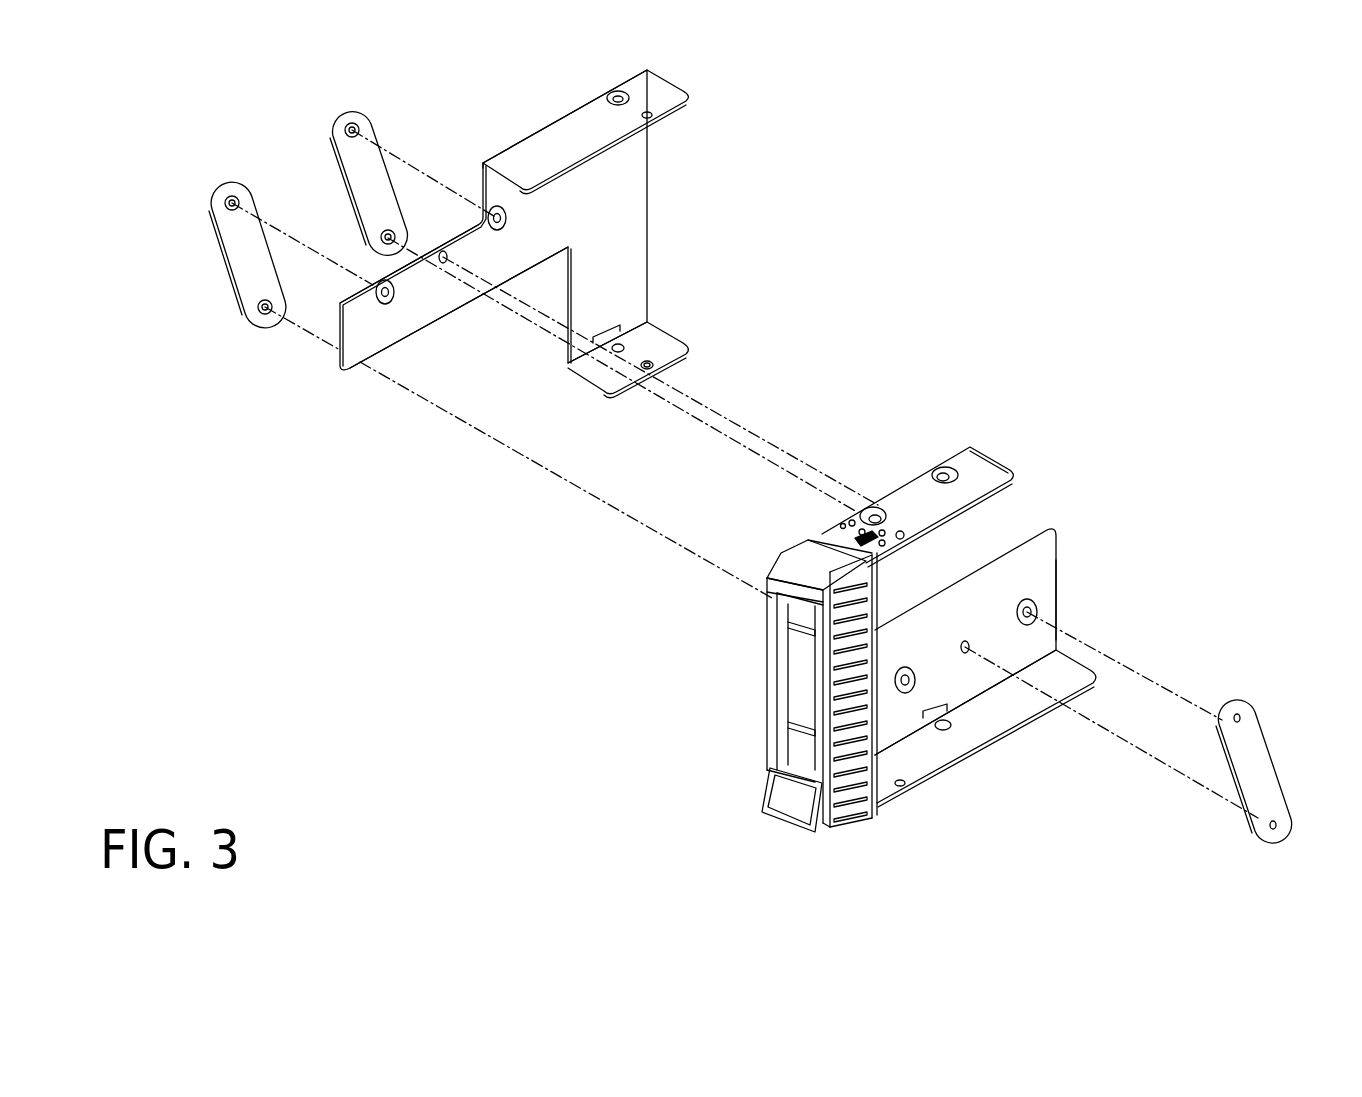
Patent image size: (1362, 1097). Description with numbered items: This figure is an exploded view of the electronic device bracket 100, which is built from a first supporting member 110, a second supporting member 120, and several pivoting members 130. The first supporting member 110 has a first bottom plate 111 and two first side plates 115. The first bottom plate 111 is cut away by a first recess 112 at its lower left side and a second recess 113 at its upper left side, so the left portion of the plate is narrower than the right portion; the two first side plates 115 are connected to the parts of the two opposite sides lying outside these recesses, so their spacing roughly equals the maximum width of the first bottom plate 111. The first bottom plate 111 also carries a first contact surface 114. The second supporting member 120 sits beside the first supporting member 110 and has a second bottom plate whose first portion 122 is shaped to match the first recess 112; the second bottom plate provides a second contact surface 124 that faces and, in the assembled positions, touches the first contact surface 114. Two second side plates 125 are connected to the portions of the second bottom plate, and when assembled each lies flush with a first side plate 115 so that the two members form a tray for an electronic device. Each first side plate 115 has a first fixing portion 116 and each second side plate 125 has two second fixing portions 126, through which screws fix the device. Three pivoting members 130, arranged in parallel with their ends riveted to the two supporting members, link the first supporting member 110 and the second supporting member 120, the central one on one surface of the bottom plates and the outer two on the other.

The electronic device bracket 100 is at (455, 812).
The first supporting member 110 is at (283, 90).
The first bottom plate 111 is at (625, 245).
The first recess 112 is at (482, 315).
The second recess 113 is at (447, 223).
The first contact surface 114 is at (443, 313).
The first side plate 115 is at (563, 138).
The first fixing portion 116 is at (620, 87).
The second supporting member 120 is at (1003, 437).
The first portion 122 is at (1045, 583).
The second contact surface 124 is at (1035, 530).
The second side plate 125 is at (902, 510).
The second fixing portion 126 is at (940, 477).
The pivoting member 130 is at (365, 177).